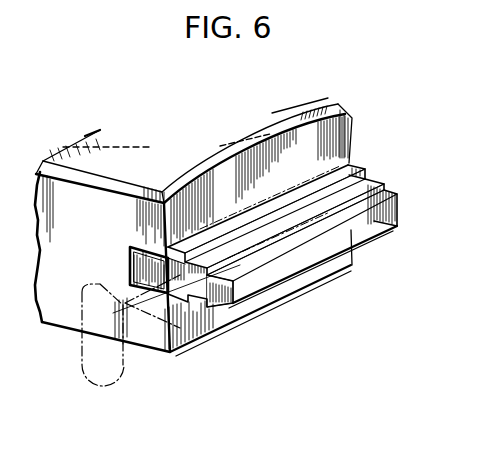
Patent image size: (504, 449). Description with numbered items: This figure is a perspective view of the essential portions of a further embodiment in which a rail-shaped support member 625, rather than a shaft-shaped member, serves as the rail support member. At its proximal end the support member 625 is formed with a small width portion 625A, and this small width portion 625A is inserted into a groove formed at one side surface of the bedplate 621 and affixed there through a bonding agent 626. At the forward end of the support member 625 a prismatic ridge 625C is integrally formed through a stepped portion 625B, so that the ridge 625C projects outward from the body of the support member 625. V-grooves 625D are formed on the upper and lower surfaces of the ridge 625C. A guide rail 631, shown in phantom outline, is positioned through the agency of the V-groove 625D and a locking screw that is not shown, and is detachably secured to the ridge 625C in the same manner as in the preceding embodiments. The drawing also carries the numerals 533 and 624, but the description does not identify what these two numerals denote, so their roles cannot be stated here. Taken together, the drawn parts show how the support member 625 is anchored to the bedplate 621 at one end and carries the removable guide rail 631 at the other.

The housing wall 533 is at (0, 53).
The bedplate 621 is at (322, 100).
The recess 624 is at (129, 246).
The rail-shaped support member 625 is at (402, 231).
The small width portion 625A is at (140, 272).
The stepped portion 625B is at (217, 238).
The prismatic ridge 625C is at (312, 250).
The V-grooves 625D is at (378, 183).
The bonding agent 626 is at (130, 250).
The guide rail 631 is at (84, 372).